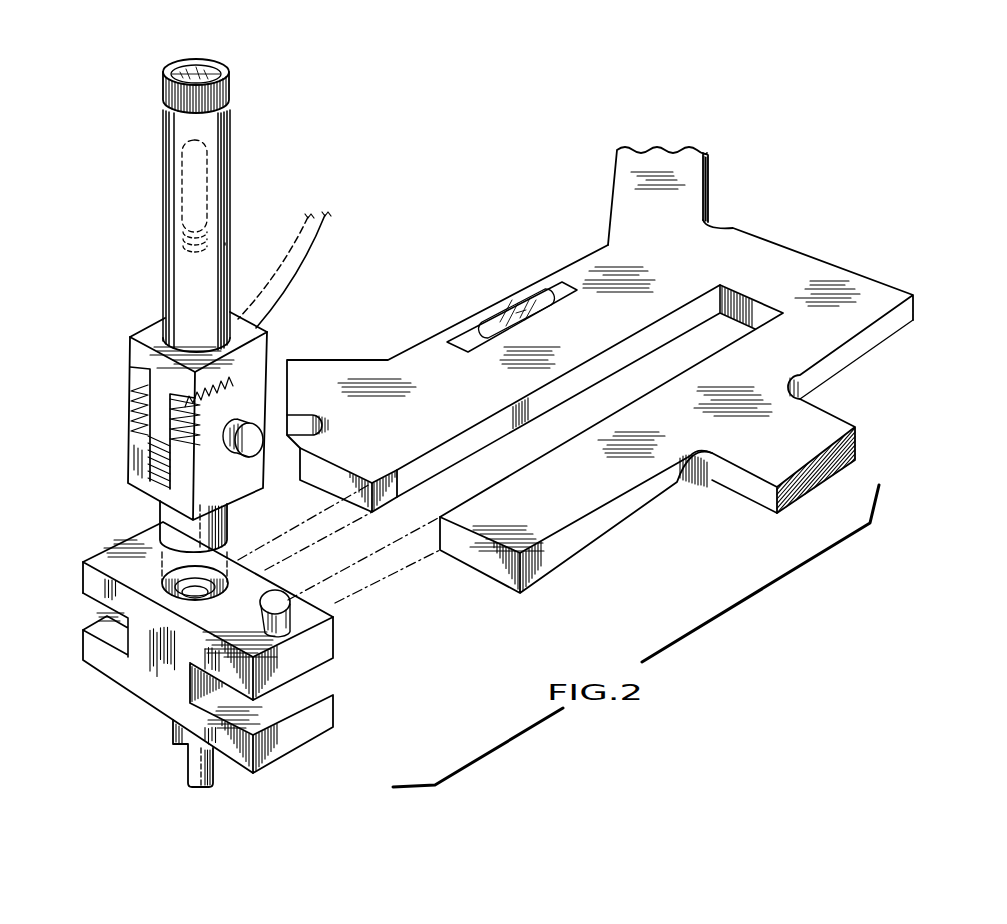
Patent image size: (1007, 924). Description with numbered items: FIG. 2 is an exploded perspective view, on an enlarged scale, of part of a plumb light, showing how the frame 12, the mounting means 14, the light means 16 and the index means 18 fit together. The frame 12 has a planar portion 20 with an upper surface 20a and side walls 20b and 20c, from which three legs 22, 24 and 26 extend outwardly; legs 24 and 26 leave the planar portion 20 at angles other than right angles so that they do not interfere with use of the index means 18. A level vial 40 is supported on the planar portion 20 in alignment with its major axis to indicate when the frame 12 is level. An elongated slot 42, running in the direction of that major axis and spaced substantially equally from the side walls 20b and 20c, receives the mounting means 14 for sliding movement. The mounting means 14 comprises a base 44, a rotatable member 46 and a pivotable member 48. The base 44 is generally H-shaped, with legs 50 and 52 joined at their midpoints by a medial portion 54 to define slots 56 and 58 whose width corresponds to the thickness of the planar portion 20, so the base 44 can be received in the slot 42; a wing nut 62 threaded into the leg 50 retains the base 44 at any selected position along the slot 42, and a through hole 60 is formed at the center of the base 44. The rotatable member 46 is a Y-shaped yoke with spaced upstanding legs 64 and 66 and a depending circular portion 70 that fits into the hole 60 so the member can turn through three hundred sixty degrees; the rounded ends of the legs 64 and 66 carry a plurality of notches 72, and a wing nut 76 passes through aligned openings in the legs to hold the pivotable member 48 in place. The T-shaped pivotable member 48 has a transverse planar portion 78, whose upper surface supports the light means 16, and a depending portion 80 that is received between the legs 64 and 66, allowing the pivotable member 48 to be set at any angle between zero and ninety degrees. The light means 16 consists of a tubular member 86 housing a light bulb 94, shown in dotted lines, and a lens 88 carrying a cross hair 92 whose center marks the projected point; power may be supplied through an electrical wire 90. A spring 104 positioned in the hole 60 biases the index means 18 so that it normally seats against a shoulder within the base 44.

The frame 12 is at (595, 341).
The mounting means 14 is at (184, 427).
The light means 16 is at (182, 185).
The index means 18 is at (216, 778).
The planar portion 20 is at (595, 341).
The upper surface 20a is at (578, 503).
The side wall 20b is at (583, 535).
The side wall 20c is at (322, 472).
The leg 22 is at (813, 420).
The leg 24 is at (650, 160).
The leg 26 is at (318, 370).
The level vial 40 is at (523, 297).
The elongated slot 42 is at (640, 392).
The base 44 is at (240, 628).
The rotatable member 46 is at (154, 448).
The pivotable member 48 is at (164, 396).
The leg 50 is at (88, 570).
The leg 52 is at (325, 718).
The medial portion 54 is at (137, 667).
The slot 56 is at (313, 674).
The slot 58 is at (105, 613).
The through hole 60 is at (224, 592).
The wing nut 62 is at (291, 600).
The upstanding leg 64 is at (183, 480).
The upstanding leg 66 is at (154, 425).
The circular portion 70 is at (229, 527).
The notches 72 is at (134, 426).
The wing nut 76 is at (258, 430).
The planar portion 78 is at (155, 333).
The laterally extending portion 80 is at (152, 434).
The tubular member 86 is at (225, 244).
The lens 88 is at (210, 63).
The electrical wire 90 is at (314, 250).
The cross hair 92 is at (192, 66).
The light bulb 94 is at (182, 146).
The spring 104 is at (178, 583).